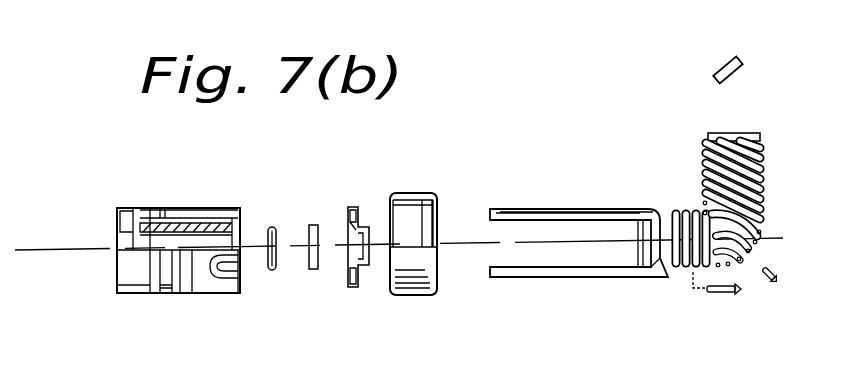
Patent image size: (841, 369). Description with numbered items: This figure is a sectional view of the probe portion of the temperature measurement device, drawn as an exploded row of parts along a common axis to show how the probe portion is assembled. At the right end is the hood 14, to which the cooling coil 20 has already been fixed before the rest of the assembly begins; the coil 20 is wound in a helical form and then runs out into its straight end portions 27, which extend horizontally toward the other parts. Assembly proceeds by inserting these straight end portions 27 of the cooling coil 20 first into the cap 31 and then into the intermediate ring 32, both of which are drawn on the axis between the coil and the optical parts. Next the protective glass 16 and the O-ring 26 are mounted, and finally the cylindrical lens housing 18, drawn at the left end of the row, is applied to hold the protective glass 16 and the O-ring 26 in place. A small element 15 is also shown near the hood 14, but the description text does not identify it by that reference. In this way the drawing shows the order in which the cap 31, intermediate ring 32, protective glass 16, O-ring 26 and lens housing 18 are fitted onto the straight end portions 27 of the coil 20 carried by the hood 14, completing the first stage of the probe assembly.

The lens housing 18 is at (198, 208).
The O-ring 26 is at (274, 227).
The protective glass 16 is at (315, 225).
The intermediate ring 32 is at (352, 207).
The cap 31 is at (410, 193).
The straight end portions 27 is at (540, 209).
The cooling coil 20 is at (765, 172).
The hood 14 is at (735, 133).
The pin 15 is at (724, 62).